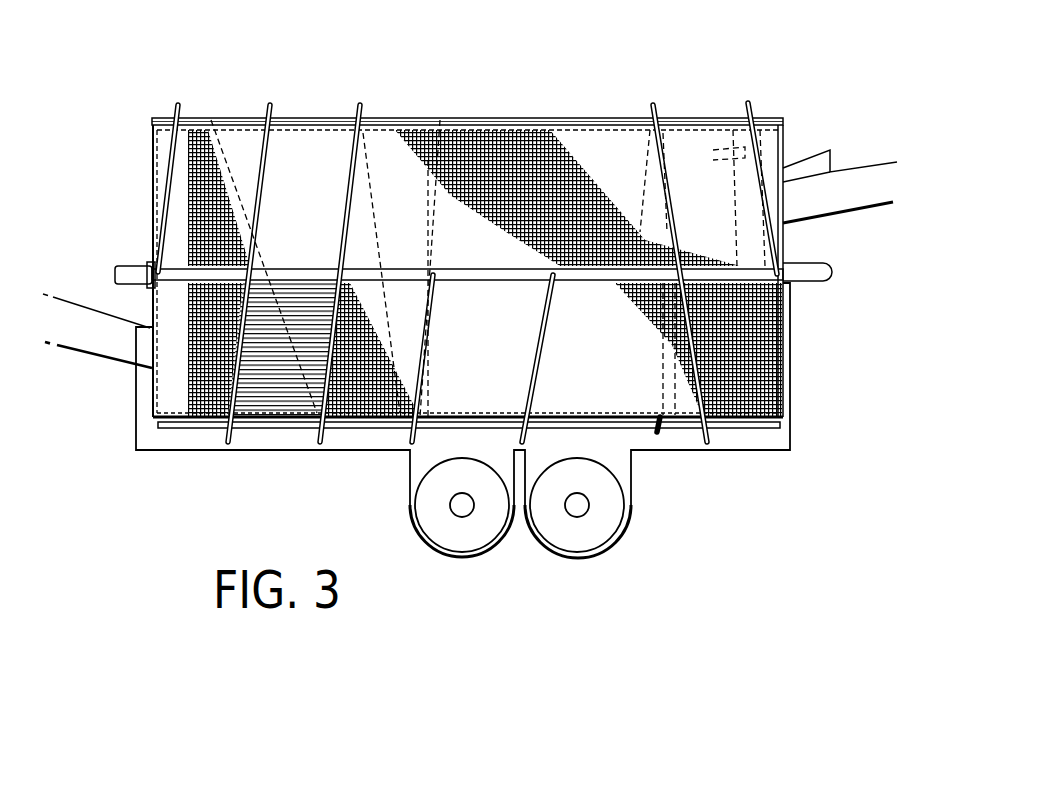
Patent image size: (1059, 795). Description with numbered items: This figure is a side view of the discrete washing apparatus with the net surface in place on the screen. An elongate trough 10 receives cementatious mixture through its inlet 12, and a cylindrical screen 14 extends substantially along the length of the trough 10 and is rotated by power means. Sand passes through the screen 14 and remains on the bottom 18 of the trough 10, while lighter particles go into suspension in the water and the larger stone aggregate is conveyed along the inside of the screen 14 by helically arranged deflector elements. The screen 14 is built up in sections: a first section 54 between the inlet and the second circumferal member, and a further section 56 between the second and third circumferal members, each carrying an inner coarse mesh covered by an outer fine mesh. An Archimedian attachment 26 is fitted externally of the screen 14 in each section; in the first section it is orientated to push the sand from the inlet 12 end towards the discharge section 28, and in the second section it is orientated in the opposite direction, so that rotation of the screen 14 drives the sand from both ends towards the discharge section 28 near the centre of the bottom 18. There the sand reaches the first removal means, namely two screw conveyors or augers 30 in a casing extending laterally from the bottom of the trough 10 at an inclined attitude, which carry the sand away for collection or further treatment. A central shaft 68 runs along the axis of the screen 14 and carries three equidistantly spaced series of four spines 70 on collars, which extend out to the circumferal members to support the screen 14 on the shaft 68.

The elongate trough 10 is at (578, 95).
The inlet 12 is at (100, 288).
The cylindrical screen 14 is at (627, 130).
The bottom 18 is at (298, 437).
The Archimedian attachment 26 is at (268, 107).
The discharge section 28 is at (412, 455).
The screw conveyors or augers 30 is at (558, 528).
The first section 54 is at (316, 153).
The section 56 is at (517, 157).
The central shaft 68 is at (520, 272).
The spines 70 is at (212, 118).